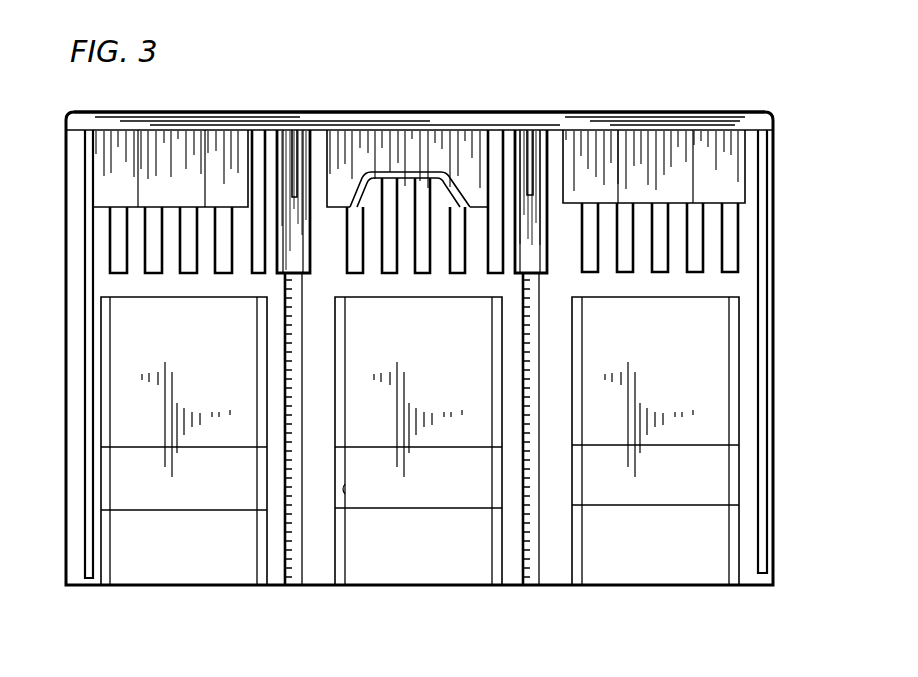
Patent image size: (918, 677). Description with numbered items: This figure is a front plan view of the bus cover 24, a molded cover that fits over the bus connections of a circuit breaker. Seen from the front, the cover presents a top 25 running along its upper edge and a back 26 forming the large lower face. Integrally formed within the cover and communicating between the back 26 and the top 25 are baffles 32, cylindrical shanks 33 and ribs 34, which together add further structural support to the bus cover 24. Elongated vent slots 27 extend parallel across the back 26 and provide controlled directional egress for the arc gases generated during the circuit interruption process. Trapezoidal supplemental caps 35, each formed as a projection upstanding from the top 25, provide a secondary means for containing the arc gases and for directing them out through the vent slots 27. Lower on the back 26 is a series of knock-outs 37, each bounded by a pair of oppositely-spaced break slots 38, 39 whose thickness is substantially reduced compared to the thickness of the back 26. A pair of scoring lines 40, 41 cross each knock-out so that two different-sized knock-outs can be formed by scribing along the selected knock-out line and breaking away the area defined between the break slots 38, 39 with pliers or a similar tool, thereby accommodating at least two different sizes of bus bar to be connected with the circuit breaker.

The bus cover 24 is at (823, 534).
The top 25 is at (686, 112).
The back 26 is at (775, 463).
The elongated vent slots 27 is at (705, 242).
The baffles 32 is at (527, 517).
The cylindrical shanks 33 is at (434, 211).
The ribs 34 is at (532, 135).
The trapezoidal supplemental caps 35 is at (407, 175).
The knock-outs 37 is at (675, 354).
The break slot 38 is at (345, 495).
The break slot 39 is at (495, 542).
The scoring line 40 is at (130, 447).
The scoring line 41 is at (135, 510).